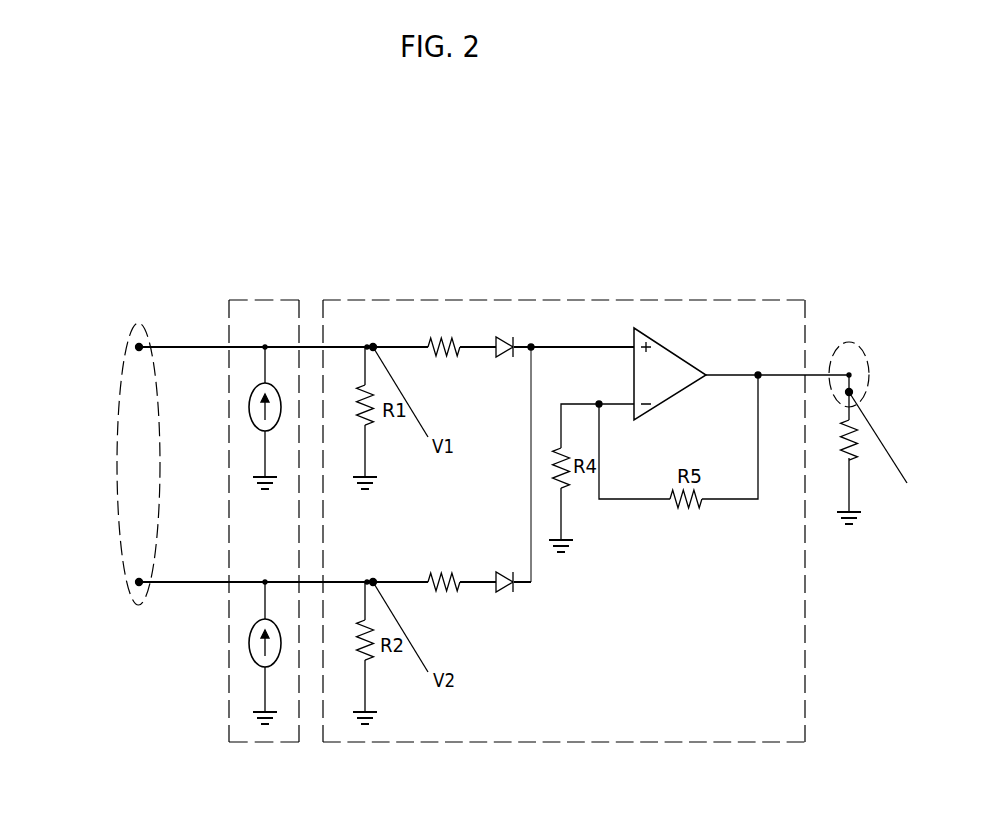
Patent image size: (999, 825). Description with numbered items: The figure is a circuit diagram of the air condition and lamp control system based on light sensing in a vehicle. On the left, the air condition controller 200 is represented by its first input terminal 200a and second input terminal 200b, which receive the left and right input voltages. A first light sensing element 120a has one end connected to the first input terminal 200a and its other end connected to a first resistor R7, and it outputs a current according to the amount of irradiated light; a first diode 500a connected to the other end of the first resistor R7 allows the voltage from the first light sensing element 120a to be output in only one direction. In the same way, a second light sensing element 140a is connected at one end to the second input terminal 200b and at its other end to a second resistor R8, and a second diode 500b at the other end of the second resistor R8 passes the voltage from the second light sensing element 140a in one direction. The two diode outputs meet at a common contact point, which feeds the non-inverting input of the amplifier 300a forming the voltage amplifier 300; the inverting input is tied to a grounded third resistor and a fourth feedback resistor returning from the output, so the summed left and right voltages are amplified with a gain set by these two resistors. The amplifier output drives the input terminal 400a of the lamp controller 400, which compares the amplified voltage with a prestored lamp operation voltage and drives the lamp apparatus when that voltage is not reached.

The air condition controller 200 is at (137, 600).
The first input terminal 200a is at (136, 347).
The second input terminal 200b is at (136, 582).
The first light sensing element 120a is at (262, 384).
The second light sensing element 140a is at (267, 648).
The first resistor R7 is at (430, 340).
The second resistor R8 is at (455, 588).
The first diode 500a is at (523, 340).
The second diode 500b is at (513, 588).
The voltage amplifier 300 is at (611, 300).
The amplifier 300a is at (681, 340).
The lamp controller 400 is at (849, 342).
The input terminal of the lamp controller 400a is at (852, 375).